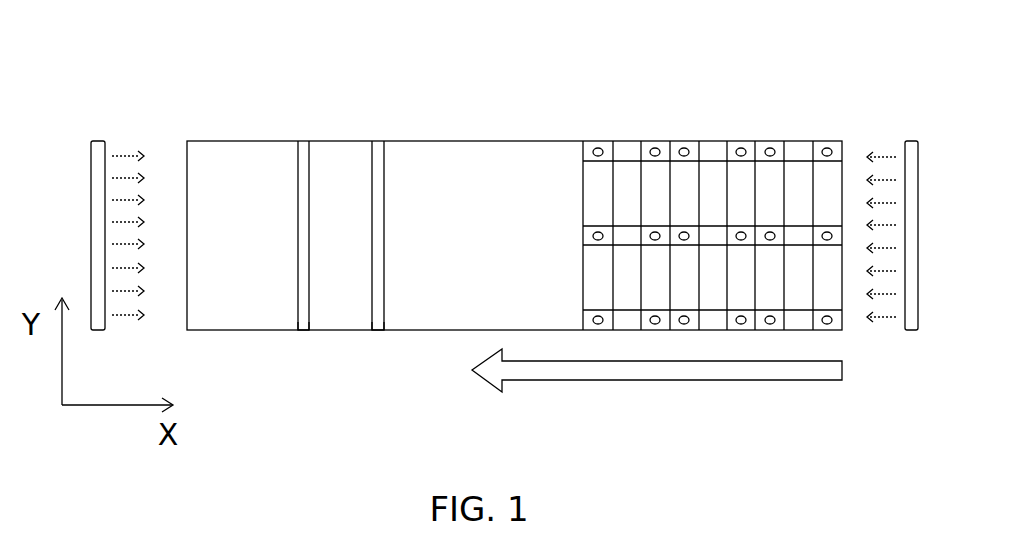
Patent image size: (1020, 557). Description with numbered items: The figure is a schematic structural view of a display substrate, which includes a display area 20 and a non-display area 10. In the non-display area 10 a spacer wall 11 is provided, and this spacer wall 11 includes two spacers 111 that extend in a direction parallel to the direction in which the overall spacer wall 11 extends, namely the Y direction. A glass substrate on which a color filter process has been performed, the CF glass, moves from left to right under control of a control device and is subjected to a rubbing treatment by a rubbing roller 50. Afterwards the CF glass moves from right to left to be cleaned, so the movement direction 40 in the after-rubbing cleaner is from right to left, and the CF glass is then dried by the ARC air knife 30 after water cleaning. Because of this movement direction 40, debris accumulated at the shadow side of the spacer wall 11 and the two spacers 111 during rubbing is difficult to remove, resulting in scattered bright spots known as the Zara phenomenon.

The non-display area 10 is at (568, 80).
The spacer wall 11 is at (304, 130).
The spacers 111 is at (303, 322).
The display area 20 is at (832, 131).
The ARC air knife 30 is at (99, 154).
The movement direction 40 is at (634, 371).
The rubbing roller 50 is at (915, 160).